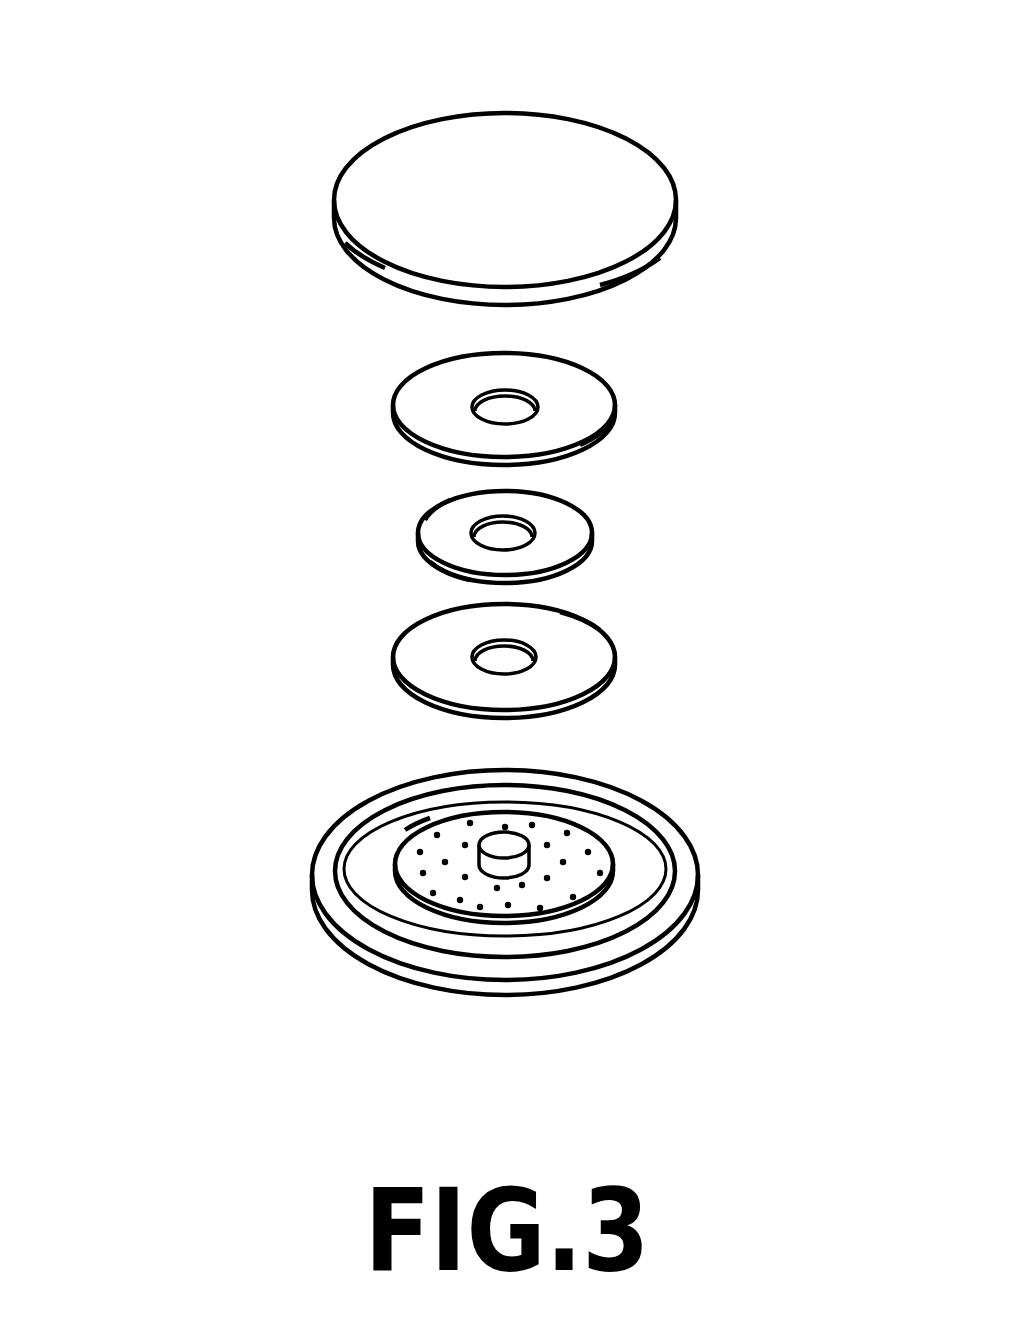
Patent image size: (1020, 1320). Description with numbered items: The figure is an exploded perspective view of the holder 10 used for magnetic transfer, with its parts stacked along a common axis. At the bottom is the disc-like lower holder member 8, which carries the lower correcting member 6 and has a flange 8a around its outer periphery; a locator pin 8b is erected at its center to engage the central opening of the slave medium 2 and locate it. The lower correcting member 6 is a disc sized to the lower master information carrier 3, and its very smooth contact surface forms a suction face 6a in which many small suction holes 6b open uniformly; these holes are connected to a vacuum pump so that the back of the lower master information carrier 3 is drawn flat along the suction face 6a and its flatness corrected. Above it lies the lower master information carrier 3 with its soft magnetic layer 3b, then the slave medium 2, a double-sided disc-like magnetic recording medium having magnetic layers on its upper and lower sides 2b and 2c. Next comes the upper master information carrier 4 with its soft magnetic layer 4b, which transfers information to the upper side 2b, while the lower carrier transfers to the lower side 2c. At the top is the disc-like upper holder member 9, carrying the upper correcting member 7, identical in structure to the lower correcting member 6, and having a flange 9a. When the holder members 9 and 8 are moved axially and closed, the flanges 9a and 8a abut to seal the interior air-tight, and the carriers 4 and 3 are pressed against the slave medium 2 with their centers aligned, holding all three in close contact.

The holder 10 is at (72, 26).
The upper holder member 9 is at (610, 153).
The flange 9a is at (363, 261).
The upper correcting member 7 is at (633, 277).
The upper master information carrier 4 is at (585, 383).
The soft magnetic layer 4b is at (604, 443).
The slave medium 2 is at (572, 524).
The upper side of slave medium 2b is at (438, 522).
The lower side of slave medium 2c is at (443, 576).
The lower master information carrier 3 is at (600, 662).
The soft magnetic layer 3b is at (580, 632).
The lower correcting member 6 is at (600, 837).
The suction face 6a is at (413, 837).
The suction holes 6b is at (423, 873).
The lower holder member 8 is at (698, 893).
The flange 8a is at (378, 927).
The locator pin 8b is at (531, 860).